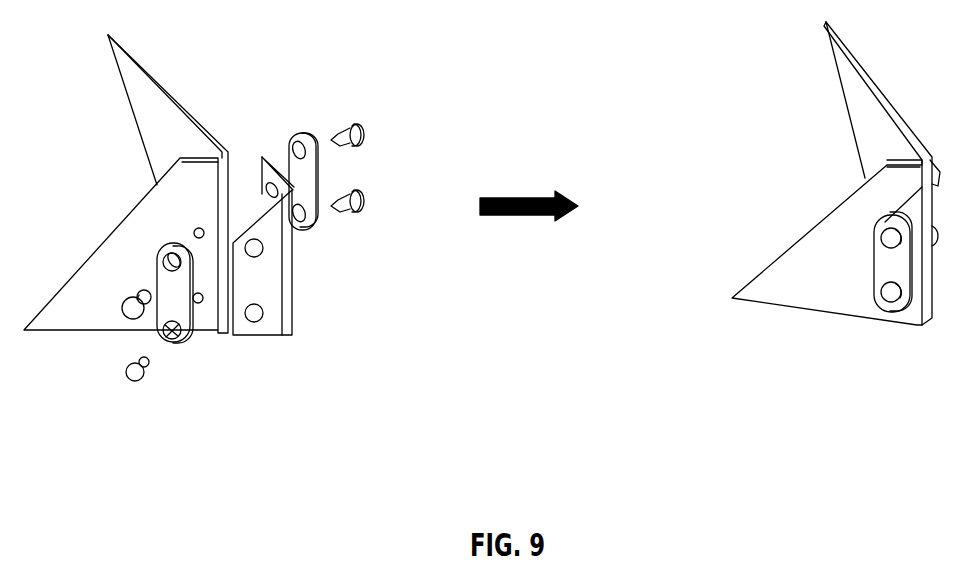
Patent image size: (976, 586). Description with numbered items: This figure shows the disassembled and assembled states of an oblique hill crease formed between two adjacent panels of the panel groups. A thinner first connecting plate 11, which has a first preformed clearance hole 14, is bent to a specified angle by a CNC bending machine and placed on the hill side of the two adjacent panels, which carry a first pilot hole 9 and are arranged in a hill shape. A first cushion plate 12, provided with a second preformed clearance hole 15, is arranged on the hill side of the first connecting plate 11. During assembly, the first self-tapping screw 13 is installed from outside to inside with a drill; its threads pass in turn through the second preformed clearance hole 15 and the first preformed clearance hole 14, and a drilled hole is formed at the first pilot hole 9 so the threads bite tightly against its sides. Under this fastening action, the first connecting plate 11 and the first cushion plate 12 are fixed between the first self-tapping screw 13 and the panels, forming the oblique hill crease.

The first pilot hole 9 is at (198, 228).
The first connecting plate 11 is at (270, 286).
The first cushion plate 12 is at (162, 265).
The first self-tapping screw 13 is at (125, 378).
The first preformed clearance hole 14 is at (262, 308).
The second preformed clearance hole 15 is at (176, 334).